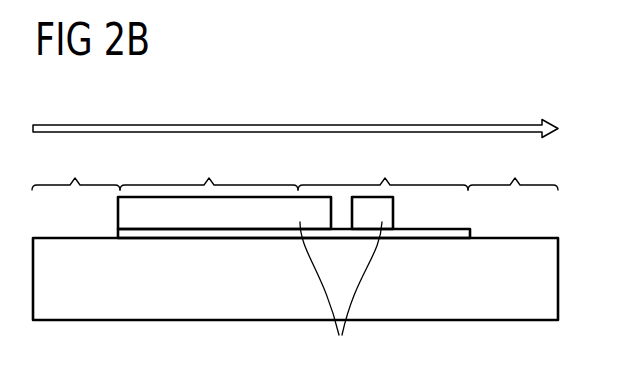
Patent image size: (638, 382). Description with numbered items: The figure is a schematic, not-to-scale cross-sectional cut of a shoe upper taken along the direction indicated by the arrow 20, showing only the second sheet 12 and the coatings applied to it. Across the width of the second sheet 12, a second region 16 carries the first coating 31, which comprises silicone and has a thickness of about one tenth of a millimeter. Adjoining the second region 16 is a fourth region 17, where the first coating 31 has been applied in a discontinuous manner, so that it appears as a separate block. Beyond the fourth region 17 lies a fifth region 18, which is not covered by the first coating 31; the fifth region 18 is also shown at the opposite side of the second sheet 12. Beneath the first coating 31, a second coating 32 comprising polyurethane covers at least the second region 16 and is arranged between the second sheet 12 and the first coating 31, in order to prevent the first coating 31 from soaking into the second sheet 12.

The second sheet 12 is at (470, 297).
The second region 16 is at (224, 185).
The fourth region 17 is at (383, 185).
The fifth region 18 is at (295, 165).
The arrow 20 is at (294, 125).
The first coating 31 is at (341, 296).
The second coating 32 is at (232, 238).